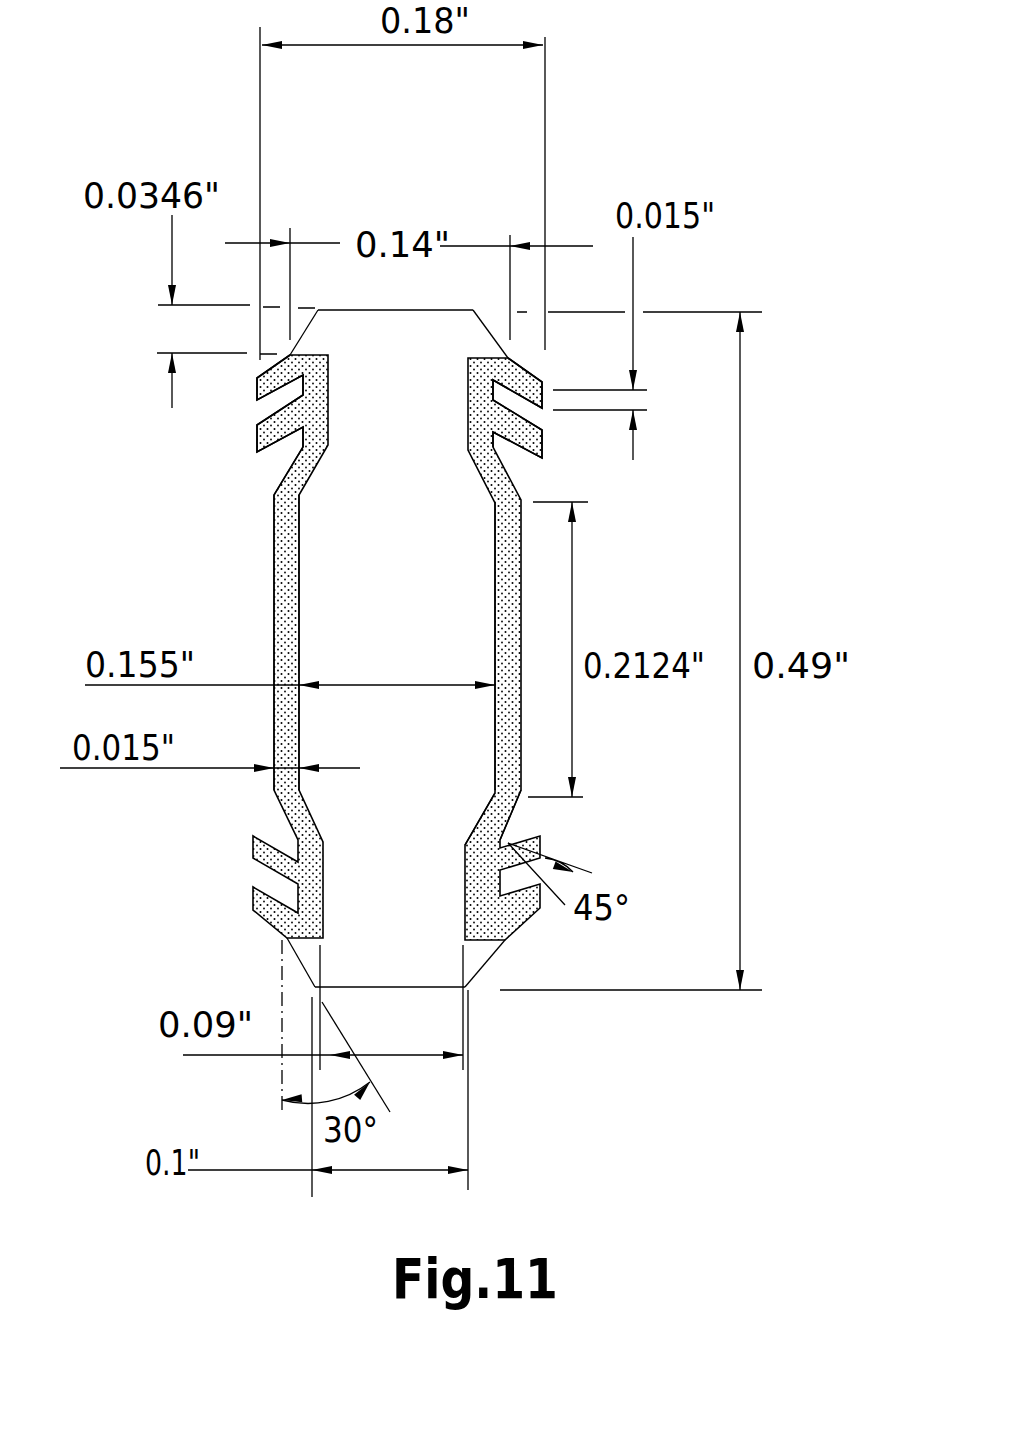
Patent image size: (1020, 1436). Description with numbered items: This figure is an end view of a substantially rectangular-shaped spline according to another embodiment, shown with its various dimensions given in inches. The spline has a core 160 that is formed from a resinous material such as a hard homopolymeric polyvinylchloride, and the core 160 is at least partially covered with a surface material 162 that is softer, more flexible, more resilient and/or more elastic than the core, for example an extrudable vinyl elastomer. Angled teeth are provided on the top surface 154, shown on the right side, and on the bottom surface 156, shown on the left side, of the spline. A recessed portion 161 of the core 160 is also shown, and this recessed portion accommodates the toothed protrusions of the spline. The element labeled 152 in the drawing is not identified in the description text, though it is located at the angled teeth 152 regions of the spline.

The retention barbs 152 is at (542, 450).
The top surface 154 is at (522, 604).
The bottom surface 156 is at (273, 578).
The core 160 is at (440, 310).
The recessed portion 161 is at (496, 858).
The surface material 162 is at (266, 487).